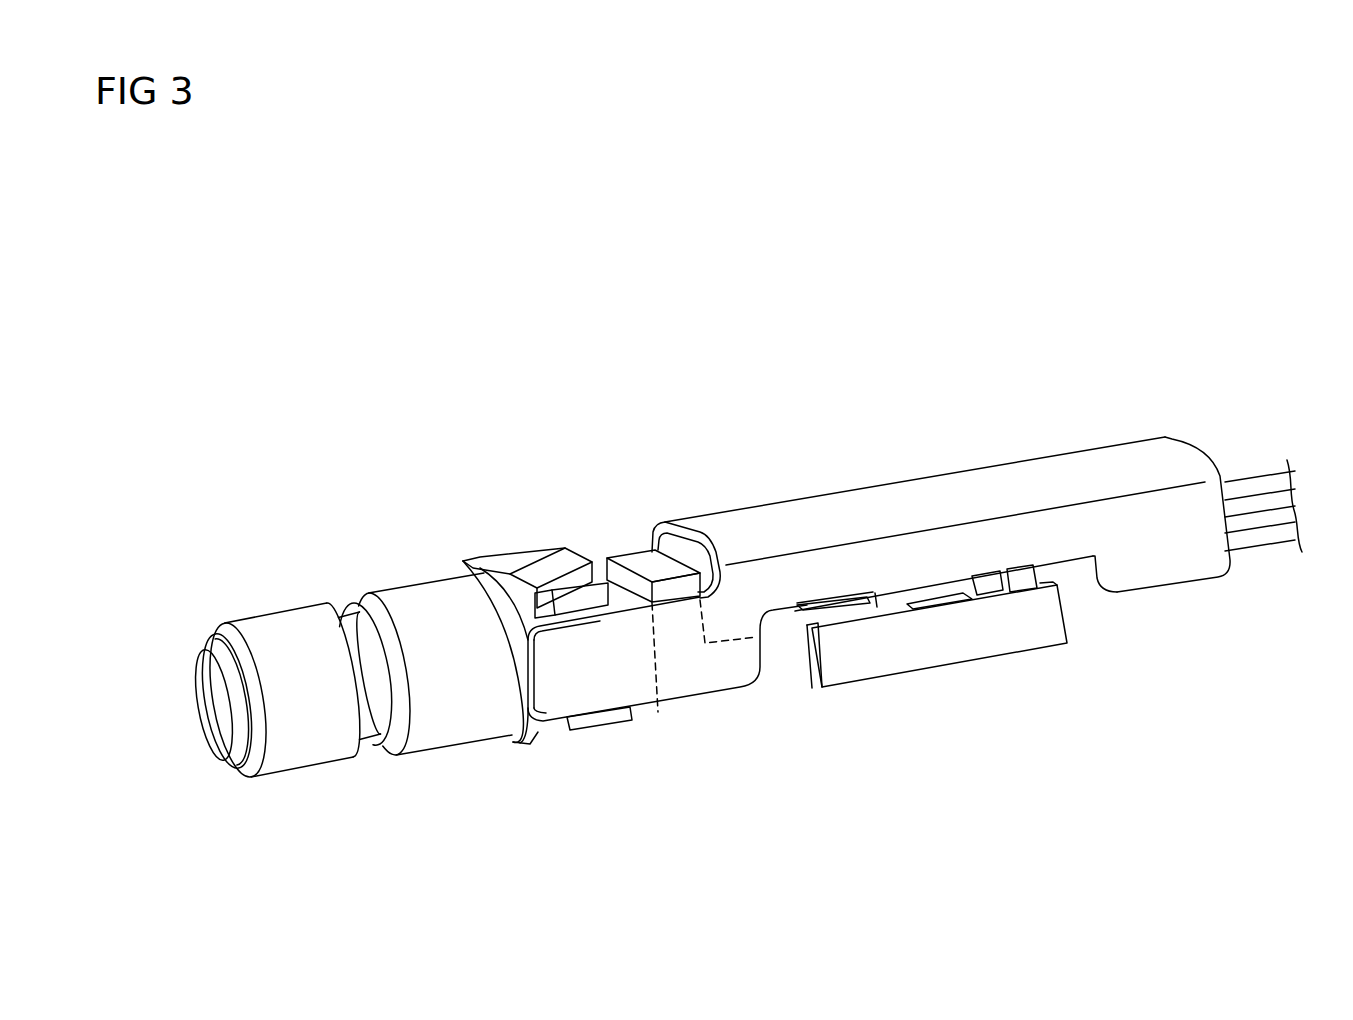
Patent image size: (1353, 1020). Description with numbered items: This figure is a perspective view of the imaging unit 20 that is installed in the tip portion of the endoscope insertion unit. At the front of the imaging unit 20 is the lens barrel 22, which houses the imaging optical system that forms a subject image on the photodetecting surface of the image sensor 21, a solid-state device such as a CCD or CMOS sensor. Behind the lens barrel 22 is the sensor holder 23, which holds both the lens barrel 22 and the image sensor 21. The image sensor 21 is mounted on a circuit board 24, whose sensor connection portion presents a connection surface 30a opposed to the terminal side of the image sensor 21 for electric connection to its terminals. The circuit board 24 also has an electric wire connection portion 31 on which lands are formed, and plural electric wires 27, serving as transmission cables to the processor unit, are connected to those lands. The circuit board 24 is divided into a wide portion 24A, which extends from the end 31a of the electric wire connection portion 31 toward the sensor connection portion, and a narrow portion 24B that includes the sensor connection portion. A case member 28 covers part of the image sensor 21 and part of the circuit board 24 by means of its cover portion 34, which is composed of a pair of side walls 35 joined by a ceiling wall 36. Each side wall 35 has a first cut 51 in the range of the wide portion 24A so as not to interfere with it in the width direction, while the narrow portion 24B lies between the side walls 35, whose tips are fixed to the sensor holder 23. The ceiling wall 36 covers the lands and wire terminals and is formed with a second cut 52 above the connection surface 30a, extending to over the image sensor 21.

The imaging unit 20 is at (484, 399).
The image sensor 21 is at (592, 730).
The lens barrel 22 is at (288, 612).
The sensor holder 23 is at (425, 590).
The circuit board 24 is at (966, 675).
The wide portion 24A is at (908, 653).
The narrow portion 24B is at (777, 677).
The electric wires 27 is at (1265, 517).
The case member 28 is at (933, 511).
The connection surface 30a is at (620, 573).
The electric wire connection portion 31 is at (857, 686).
The end of the electric wire connection portion 31a is at (1065, 632).
The cover portion 34 is at (842, 488).
The side walls 35 is at (1065, 545).
The ceiling wall 36 is at (987, 473).
The first cut 51 is at (1075, 587).
The second cut 52 is at (648, 537).